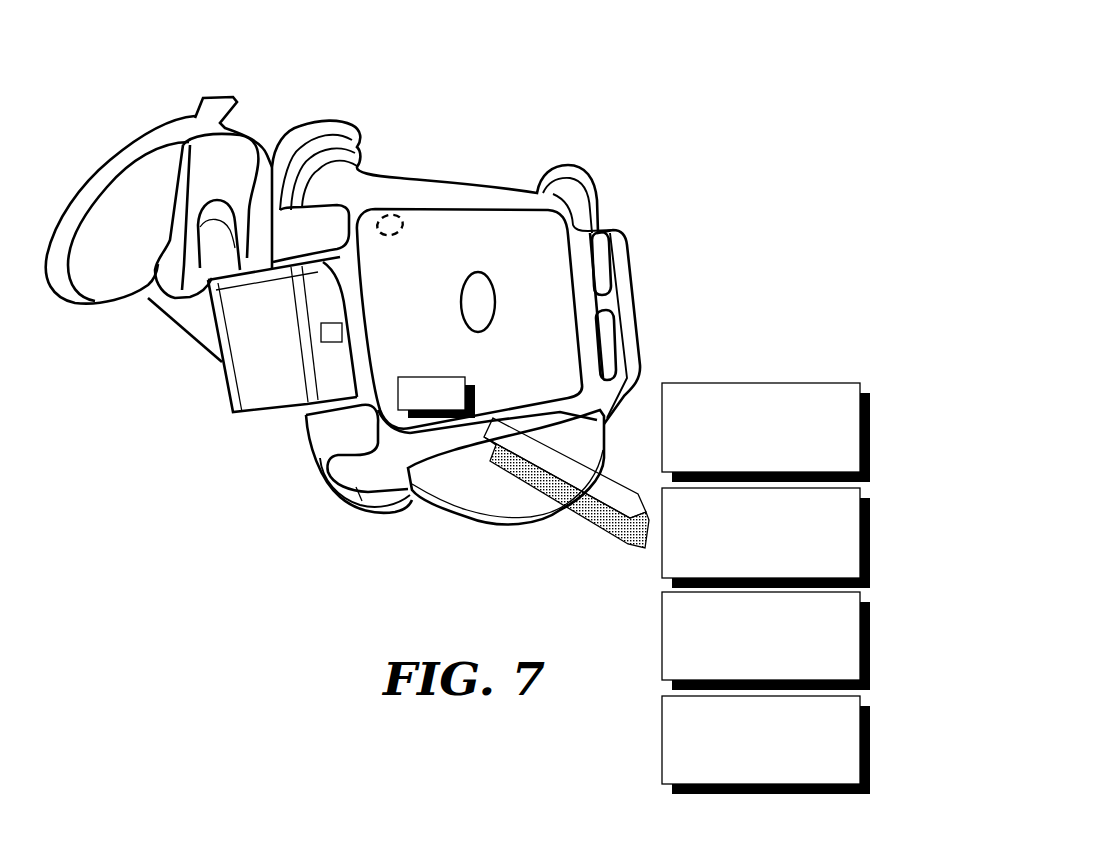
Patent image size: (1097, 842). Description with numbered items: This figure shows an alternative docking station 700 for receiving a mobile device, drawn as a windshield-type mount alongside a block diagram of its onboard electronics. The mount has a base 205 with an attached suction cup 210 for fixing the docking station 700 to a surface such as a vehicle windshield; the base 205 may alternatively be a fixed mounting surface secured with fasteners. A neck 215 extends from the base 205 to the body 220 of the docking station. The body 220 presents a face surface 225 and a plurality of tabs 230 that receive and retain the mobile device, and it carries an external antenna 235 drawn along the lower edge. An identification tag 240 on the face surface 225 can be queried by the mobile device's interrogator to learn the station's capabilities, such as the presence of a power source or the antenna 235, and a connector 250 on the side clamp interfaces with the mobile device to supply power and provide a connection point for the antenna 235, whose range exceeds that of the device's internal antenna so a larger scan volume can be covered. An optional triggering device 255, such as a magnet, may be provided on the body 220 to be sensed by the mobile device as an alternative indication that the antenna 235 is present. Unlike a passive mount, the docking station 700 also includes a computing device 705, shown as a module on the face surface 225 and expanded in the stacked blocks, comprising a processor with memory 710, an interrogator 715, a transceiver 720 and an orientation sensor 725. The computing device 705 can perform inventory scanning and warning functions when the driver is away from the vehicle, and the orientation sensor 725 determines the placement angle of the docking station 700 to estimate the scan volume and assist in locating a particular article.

The docking station 700 is at (631, 90).
The base 205 is at (100, 277).
The suction cup 210 is at (147, 147).
The neck 215 is at (177, 317).
The body 220 is at (457, 193).
The face surface 225 is at (507, 230).
The tabs 230 is at (320, 220).
The antenna 235 is at (470, 497).
The identification tag 240 is at (453, 300).
The connector 250 is at (320, 334).
The triggering device 255 is at (407, 213).
The computing device 705 is at (473, 390).
The processor with memory 710 is at (766, 432).
The interrogator 715 is at (766, 538).
The transceiver 720 is at (766, 641).
The orientation sensor 725 is at (766, 745).